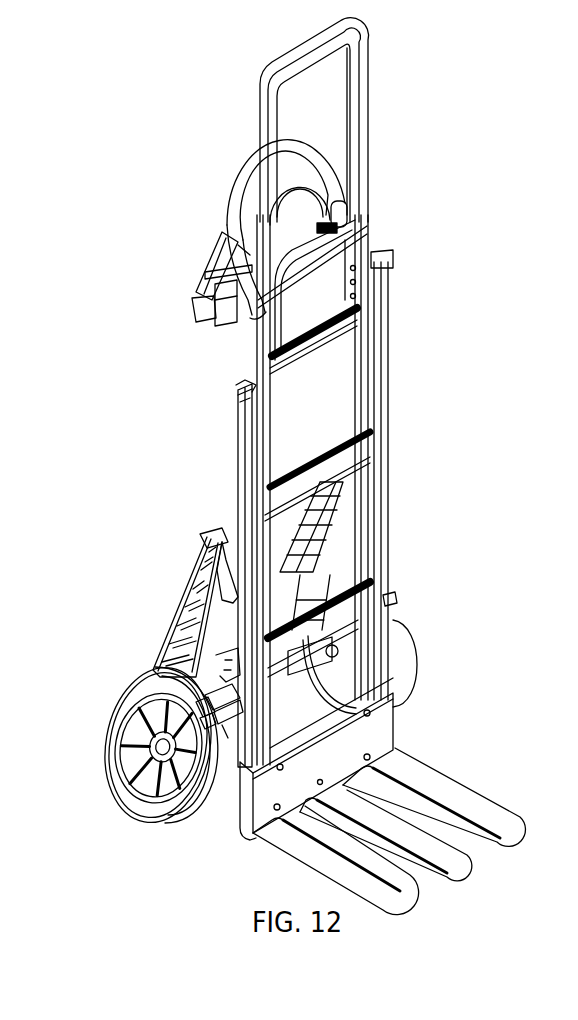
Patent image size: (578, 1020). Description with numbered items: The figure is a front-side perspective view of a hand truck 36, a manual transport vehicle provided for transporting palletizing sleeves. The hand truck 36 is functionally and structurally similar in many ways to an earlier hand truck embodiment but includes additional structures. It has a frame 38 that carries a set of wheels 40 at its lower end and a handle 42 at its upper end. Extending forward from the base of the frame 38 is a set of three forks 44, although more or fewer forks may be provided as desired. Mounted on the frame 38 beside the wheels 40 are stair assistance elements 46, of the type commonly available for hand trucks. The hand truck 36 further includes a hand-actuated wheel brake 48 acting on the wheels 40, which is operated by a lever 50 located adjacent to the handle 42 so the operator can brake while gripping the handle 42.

The hand truck 36 is at (486, 194).
The frame 38 is at (368, 97).
The wheels 40 is at (147, 798).
The handle 42 is at (243, 172).
The forks 44 is at (507, 822).
The stair assistance elements 46 is at (182, 592).
The hand-actuated wheel brake 48 is at (216, 720).
The lever 50 is at (215, 256).